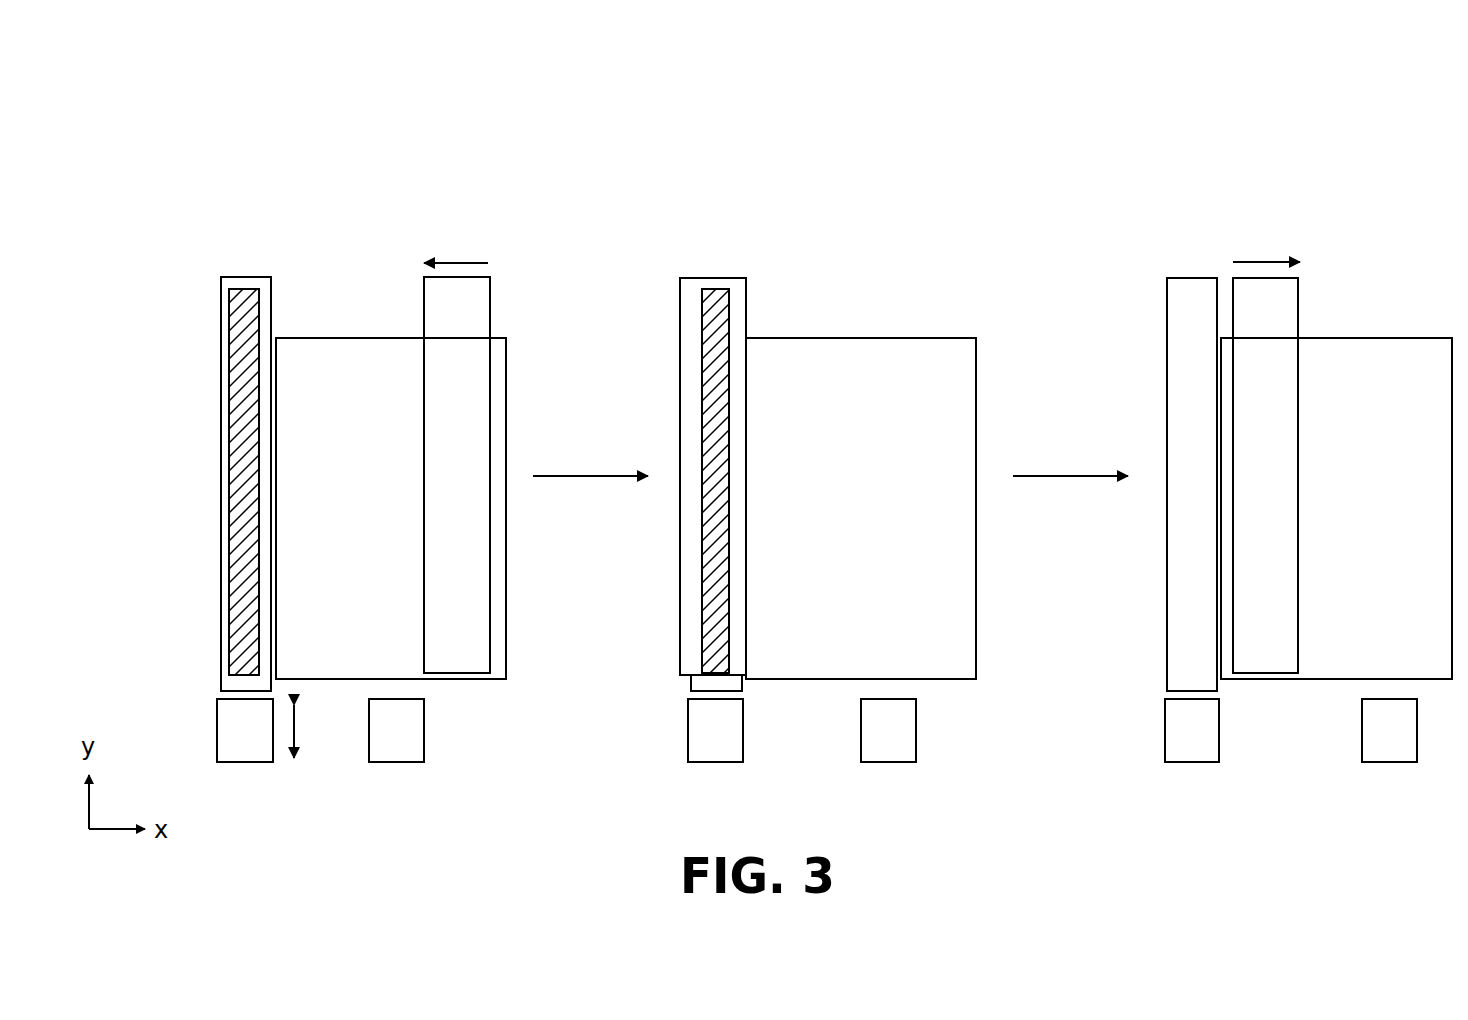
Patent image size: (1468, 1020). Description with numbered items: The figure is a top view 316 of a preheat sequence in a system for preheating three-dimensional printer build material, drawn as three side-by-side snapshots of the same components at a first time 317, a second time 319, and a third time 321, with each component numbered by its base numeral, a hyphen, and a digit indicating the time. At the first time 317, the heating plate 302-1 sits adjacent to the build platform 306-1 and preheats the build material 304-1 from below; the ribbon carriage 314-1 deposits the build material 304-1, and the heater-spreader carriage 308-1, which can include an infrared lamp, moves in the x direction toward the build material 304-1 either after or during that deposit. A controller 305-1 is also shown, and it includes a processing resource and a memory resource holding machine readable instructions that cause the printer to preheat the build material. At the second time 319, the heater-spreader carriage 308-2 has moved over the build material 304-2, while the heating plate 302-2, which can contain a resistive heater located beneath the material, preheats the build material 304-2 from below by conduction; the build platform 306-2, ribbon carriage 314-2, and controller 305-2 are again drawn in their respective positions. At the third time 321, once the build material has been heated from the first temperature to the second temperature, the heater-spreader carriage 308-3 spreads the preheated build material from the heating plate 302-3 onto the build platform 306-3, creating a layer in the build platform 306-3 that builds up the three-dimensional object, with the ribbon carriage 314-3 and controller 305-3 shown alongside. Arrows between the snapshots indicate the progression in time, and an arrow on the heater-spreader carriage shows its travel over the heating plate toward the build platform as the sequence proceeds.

The top view 316 is at (236, 84).
The first time 317 is at (215, 212).
The second time 319 is at (630, 216).
The third time 321 is at (1137, 223).
The heating plate 302-1 is at (221, 299).
The build material 304-1 is at (232, 352).
The build platform 306-1 is at (346, 336).
The heater-spreader carriage 308-1 is at (453, 675).
The ribbon carriage 314-1 is at (217, 726).
The controller 305-1 is at (395, 762).
The heating plate 302-2 is at (690, 585).
The build material 304-2 is at (730, 612).
The build platform 306-2 is at (890, 337).
The heater-spreader carriage 308-2 is at (710, 277).
The ribbon carriage 314-2 is at (688, 726).
The controller 305-2 is at (888, 762).
The heating plate 302-3 is at (1167, 300).
The build platform 306-3 is at (1397, 337).
The heater-spreader carriage 308-3 is at (1268, 675).
The ribbon carriage 314-3 is at (1165, 726).
The controller 305-3 is at (1388, 762).